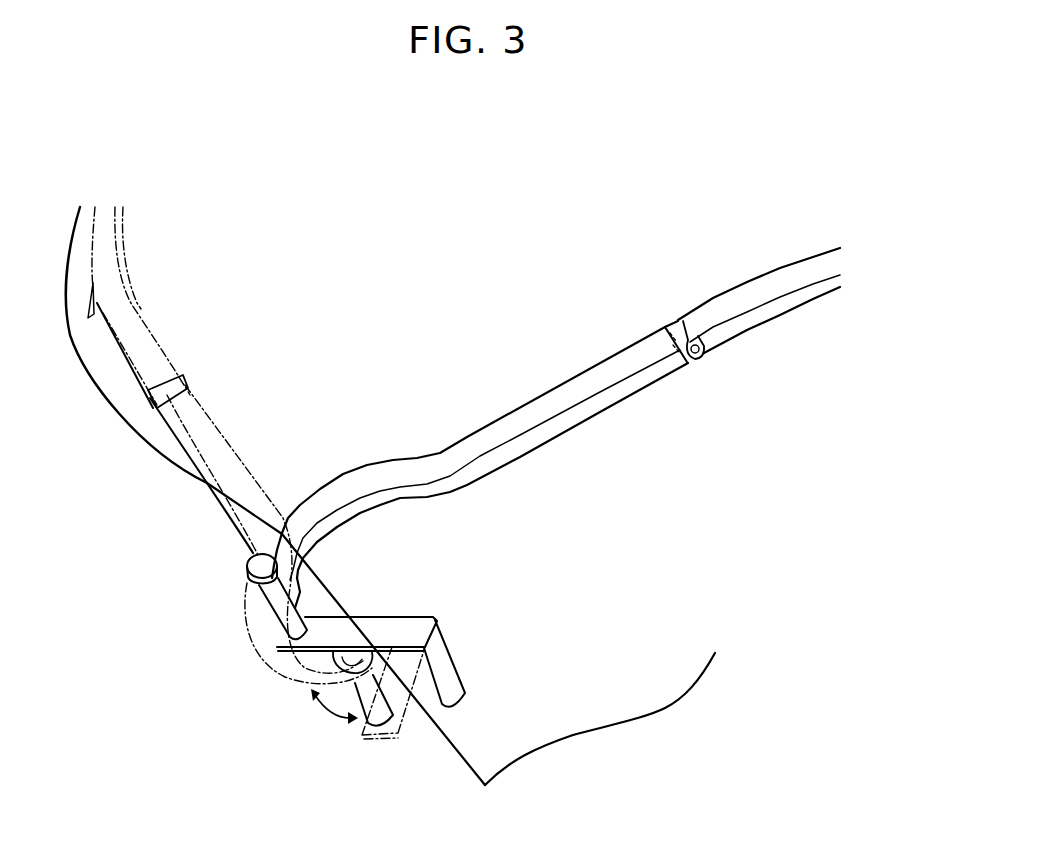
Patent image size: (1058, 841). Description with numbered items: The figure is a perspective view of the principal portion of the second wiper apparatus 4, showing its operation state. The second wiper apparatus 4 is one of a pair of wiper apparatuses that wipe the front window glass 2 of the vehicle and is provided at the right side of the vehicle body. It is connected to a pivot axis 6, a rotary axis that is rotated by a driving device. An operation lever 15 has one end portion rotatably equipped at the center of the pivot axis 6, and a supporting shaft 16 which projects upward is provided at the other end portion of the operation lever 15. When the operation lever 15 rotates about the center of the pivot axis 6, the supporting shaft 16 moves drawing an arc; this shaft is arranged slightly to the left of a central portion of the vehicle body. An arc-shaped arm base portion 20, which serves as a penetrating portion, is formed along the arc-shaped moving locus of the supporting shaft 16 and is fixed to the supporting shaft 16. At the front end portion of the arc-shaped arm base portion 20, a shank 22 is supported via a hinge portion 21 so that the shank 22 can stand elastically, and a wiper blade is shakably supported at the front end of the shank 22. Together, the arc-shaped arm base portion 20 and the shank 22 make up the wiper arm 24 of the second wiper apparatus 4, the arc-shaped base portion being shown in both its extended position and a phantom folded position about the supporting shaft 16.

The front window glass 2 is at (720, 504).
The second wiper apparatus 4 is at (668, 260).
The pivot axis 6 is at (447, 670).
The operation lever 15 is at (413, 627).
The supporting shaft 16 is at (298, 603).
The arc-shaped arm base portion 20 is at (320, 506).
The hinge portion 21 is at (185, 380).
The shank 22 is at (148, 323).
The wiper arm 24 is at (511, 445).